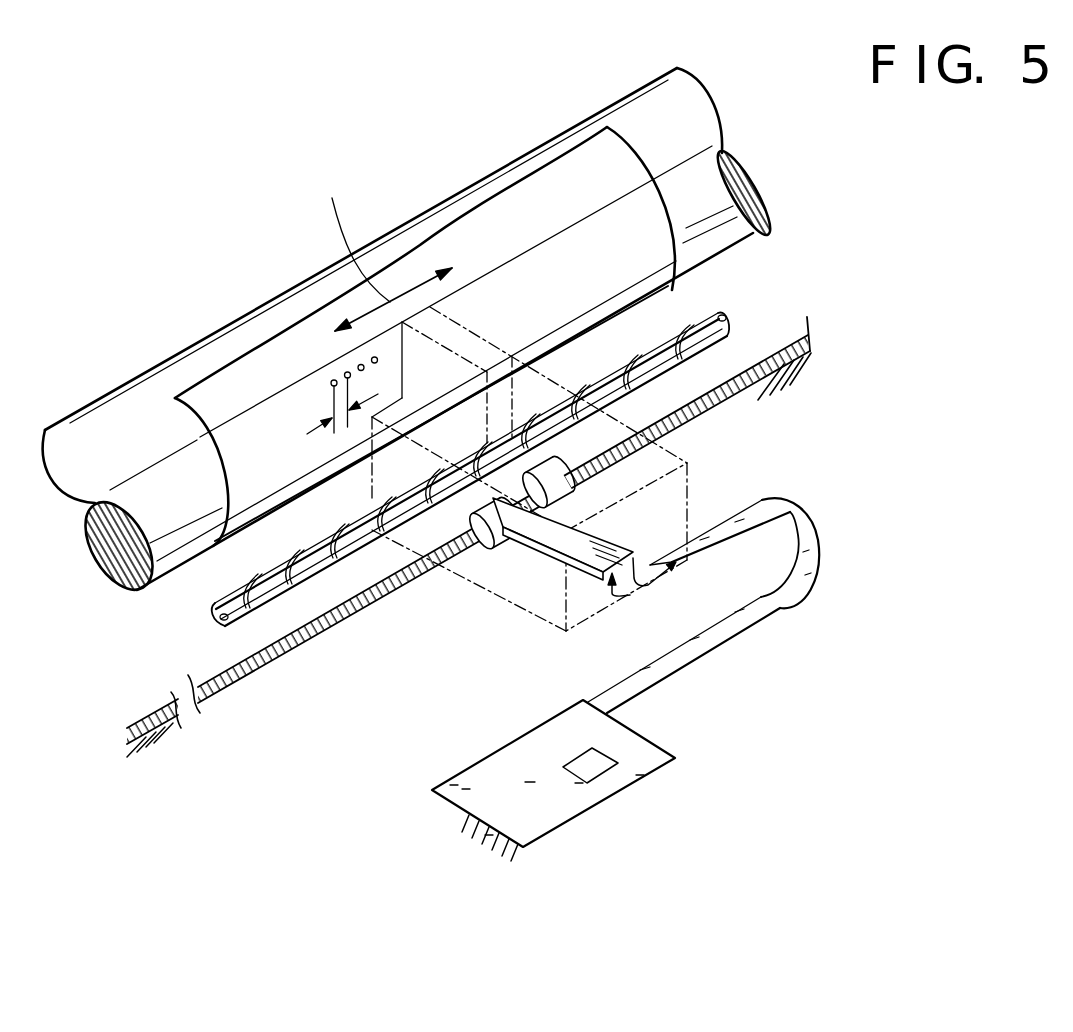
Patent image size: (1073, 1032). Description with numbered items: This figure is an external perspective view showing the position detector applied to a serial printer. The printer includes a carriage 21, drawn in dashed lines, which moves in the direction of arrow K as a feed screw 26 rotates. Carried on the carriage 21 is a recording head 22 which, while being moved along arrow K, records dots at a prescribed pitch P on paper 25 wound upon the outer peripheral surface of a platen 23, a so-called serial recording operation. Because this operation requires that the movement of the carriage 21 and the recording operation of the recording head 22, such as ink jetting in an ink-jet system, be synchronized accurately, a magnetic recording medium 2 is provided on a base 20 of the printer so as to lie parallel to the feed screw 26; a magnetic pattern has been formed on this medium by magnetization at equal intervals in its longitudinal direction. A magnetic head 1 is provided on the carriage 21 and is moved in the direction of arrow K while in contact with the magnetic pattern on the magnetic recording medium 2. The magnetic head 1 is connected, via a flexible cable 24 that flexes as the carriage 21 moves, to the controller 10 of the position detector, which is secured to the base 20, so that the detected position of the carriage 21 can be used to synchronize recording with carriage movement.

The magnetic head 1 is at (543, 530).
The magnetic recording medium 2 is at (292, 646).
The controller 10 is at (627, 783).
The base 20 is at (812, 360).
The carriage 21 is at (540, 390).
The recording head 22 is at (473, 342).
The platen 23 is at (137, 398).
The flexible cable 24 is at (807, 583).
The paper 25 is at (550, 200).
The feed screw 26 is at (235, 590).